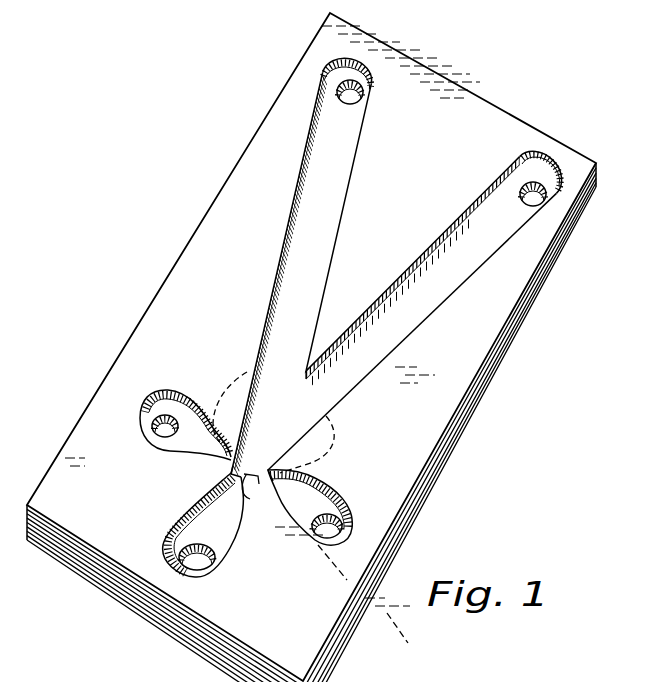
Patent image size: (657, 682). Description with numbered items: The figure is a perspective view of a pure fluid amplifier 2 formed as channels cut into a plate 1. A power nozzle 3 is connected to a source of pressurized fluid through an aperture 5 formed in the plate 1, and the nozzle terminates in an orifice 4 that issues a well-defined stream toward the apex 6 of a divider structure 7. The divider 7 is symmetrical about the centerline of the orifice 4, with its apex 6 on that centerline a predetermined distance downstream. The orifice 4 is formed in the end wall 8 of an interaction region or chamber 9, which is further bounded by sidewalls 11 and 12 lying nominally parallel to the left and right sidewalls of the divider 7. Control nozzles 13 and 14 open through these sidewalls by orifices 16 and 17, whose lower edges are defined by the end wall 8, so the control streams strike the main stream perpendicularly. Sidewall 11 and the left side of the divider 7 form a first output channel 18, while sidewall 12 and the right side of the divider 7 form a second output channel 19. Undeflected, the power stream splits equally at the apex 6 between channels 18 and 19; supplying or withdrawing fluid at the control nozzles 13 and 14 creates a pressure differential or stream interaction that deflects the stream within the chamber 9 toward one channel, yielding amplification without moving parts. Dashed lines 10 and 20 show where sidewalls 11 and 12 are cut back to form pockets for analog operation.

The plate 1 is at (473, 407).
The amplifier 2 is at (440, 500).
The power nozzle 3 is at (220, 527).
The orifice 4 is at (227, 480).
The aperture 5 is at (197, 568).
The apex 6 is at (317, 338).
The divider structure 7 is at (386, 249).
The end wall 8 is at (252, 492).
The interaction region or chamber 9 is at (283, 430).
The dashed line 10 is at (246, 372).
The sidewall 11 is at (276, 278).
The sidewall 12 is at (401, 346).
The control nozzle 13 is at (208, 406).
The control nozzle 14 is at (338, 487).
The orifice 16 is at (230, 454).
The orifice 17 is at (305, 470).
The first output channel 18 is at (320, 208).
The output channel 19 is at (452, 283).
The dashed line 20 is at (340, 437).